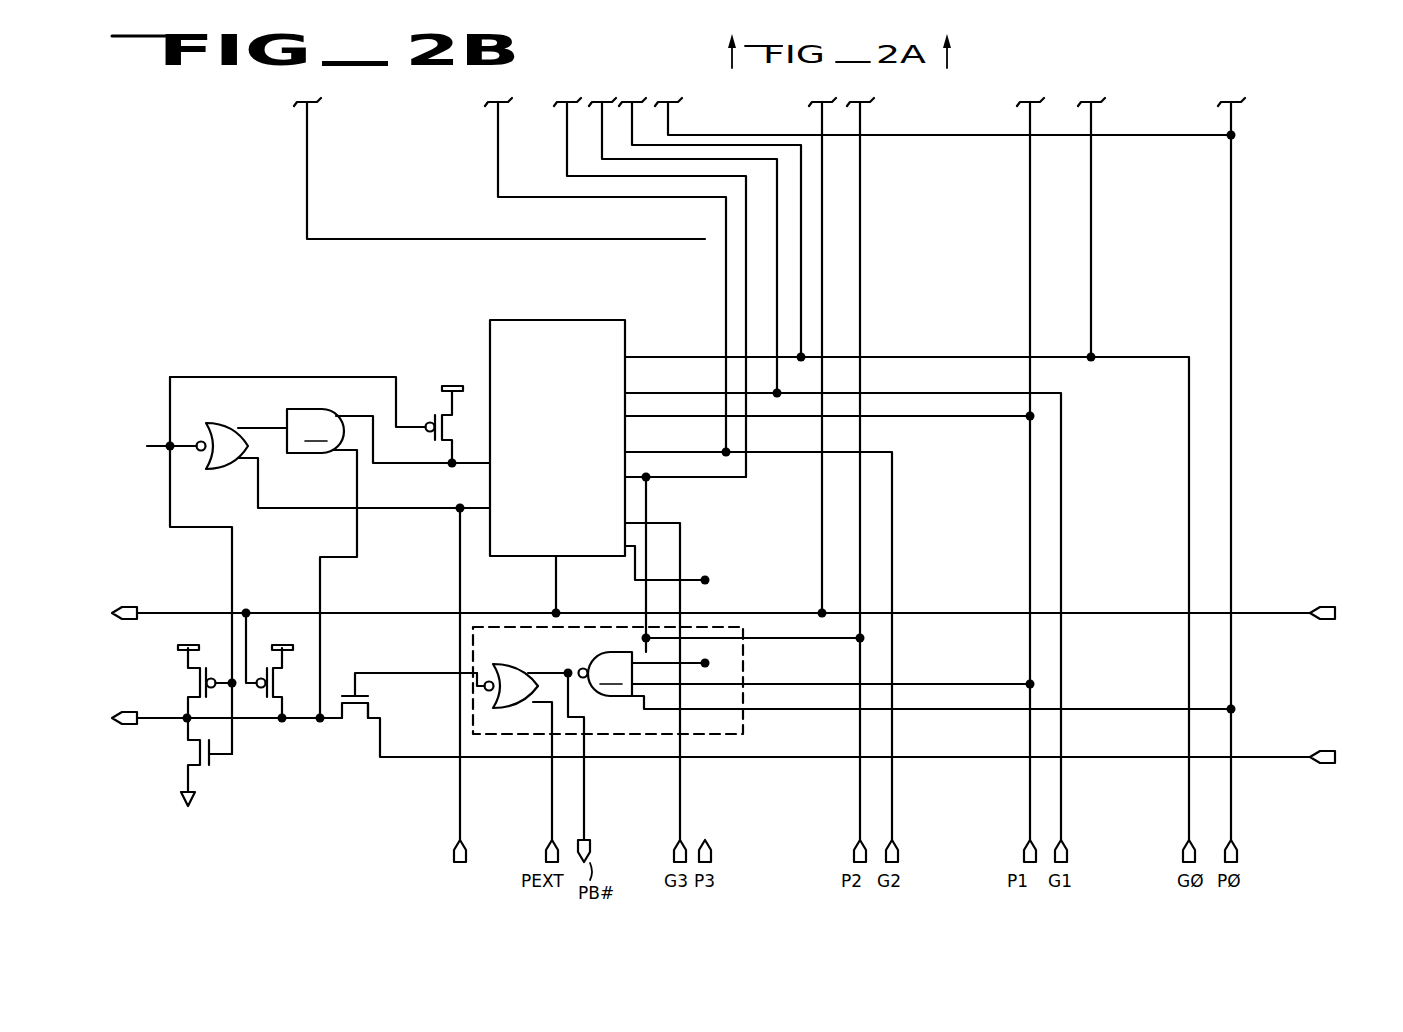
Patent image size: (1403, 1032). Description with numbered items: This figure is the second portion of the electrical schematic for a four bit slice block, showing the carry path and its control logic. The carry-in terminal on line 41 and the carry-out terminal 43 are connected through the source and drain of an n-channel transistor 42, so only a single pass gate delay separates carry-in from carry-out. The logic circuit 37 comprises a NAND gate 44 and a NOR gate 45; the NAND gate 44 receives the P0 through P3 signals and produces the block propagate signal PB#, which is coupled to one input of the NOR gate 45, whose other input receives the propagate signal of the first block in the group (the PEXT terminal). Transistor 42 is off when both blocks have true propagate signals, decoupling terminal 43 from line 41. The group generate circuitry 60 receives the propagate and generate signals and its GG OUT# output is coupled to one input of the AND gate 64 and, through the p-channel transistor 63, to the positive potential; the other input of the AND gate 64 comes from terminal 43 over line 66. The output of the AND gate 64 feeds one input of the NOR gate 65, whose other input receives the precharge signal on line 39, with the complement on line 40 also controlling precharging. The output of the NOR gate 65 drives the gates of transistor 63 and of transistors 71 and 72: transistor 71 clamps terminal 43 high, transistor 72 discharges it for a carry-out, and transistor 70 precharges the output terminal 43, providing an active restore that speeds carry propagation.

The group generate circuitry 60 is at (609, 320).
The p-channel transistor 63 is at (450, 433).
The AND gate 64 is at (388, 449).
The NOR gate 65 is at (237, 424).
The line 66 is at (323, 590).
The logic circuit 37 is at (747, 735).
The precharge line 39 is at (461, 833).
The precharge complement line 40 is at (1262, 613).
The carry-in line 41 is at (1274, 757).
The n-channel transistor 42 is at (355, 710).
The carry-out terminal 43 is at (158, 723).
The NAND gate 44 is at (905, 680).
The NOR gate 45 is at (527, 707).
The transistor 70 is at (279, 689).
The p-channel transistor 71 is at (196, 690).
The transistor 72 is at (198, 754).